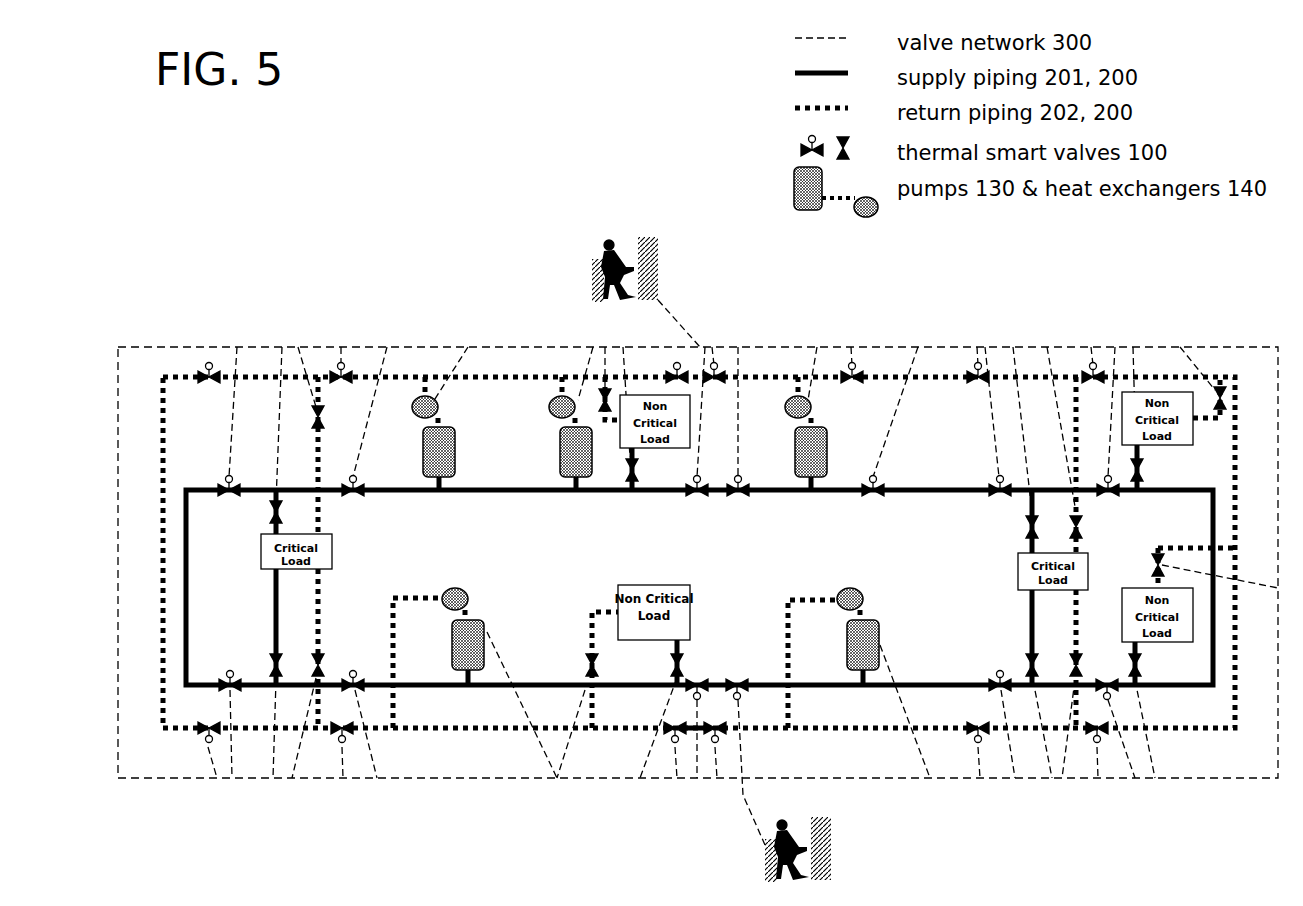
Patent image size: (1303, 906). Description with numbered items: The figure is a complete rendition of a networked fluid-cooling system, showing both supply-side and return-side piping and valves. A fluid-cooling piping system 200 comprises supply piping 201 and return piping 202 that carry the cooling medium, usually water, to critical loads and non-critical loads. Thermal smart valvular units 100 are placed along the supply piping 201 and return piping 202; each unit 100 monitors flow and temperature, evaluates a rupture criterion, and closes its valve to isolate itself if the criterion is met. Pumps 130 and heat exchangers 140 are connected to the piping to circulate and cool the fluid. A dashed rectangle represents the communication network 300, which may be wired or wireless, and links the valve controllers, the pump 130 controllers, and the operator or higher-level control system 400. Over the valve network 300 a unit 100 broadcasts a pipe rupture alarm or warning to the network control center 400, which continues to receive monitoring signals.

The thermal smart valvular unit 100 is at (207, 362).
The pump 130 is at (452, 588).
The operator console 140 is at (487, 617).
The fluid-cooling piping system 200 is at (699, 620).
The supply piping 201 is at (932, 497).
The return piping 202 is at (445, 737).
The communication network 300 is at (937, 347).
The operator console / network control center 400 is at (710, 559).